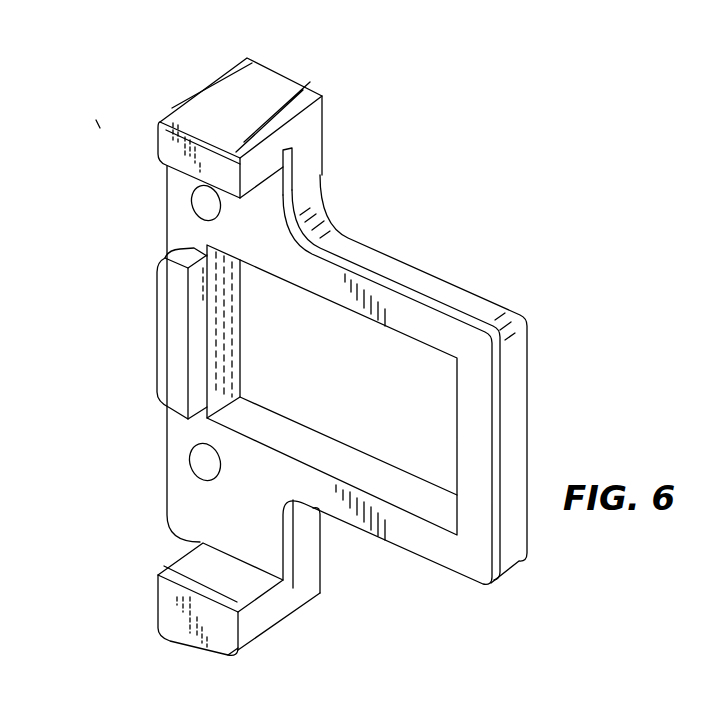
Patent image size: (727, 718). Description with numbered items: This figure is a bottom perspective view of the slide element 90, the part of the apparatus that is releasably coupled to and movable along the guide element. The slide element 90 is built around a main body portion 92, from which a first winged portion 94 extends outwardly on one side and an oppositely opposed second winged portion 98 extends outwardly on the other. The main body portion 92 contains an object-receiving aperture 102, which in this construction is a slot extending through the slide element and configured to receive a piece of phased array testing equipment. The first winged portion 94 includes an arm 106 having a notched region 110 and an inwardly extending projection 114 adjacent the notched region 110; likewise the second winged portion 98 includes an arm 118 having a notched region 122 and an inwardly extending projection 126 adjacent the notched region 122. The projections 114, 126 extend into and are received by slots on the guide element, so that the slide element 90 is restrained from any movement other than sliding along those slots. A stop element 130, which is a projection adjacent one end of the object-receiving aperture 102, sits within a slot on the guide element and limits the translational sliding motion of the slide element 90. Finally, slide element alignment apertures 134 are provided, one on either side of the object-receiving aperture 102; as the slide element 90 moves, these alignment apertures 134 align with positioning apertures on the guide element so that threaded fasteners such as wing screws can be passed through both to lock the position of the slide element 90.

The slide element 90 is at (95, 118).
The main body portion 92 is at (182, 433).
The first winged portion 94 is at (278, 632).
The second winged portion 98 is at (218, 72).
The object-receiving aperture 102 is at (398, 365).
The arm 106 is at (257, 640).
The notched region 110 is at (282, 598).
The inwardly extending projection 114 is at (183, 573).
The arm 118 is at (262, 88).
The notched region 122 is at (290, 150).
The inwardly extending projection 126 is at (258, 203).
The stop element 130 is at (173, 333).
The slide element alignment apertures 134 is at (205, 205).